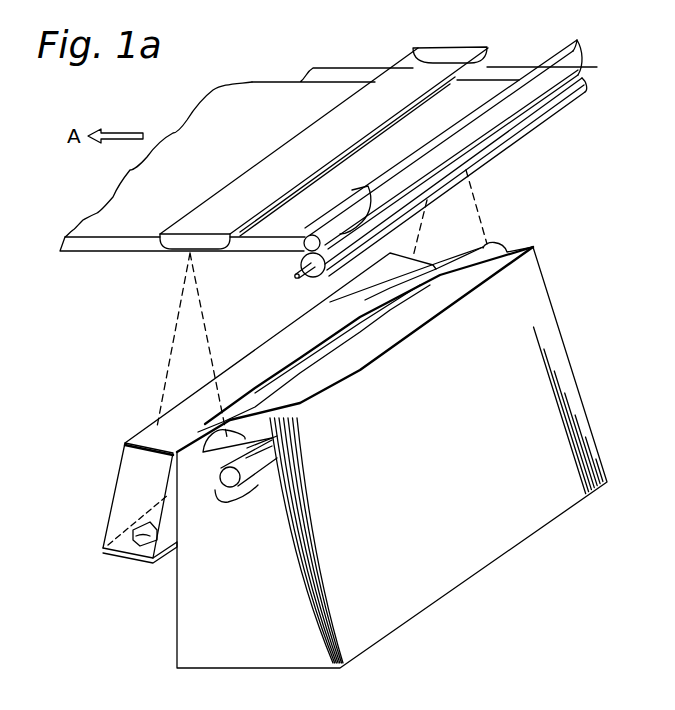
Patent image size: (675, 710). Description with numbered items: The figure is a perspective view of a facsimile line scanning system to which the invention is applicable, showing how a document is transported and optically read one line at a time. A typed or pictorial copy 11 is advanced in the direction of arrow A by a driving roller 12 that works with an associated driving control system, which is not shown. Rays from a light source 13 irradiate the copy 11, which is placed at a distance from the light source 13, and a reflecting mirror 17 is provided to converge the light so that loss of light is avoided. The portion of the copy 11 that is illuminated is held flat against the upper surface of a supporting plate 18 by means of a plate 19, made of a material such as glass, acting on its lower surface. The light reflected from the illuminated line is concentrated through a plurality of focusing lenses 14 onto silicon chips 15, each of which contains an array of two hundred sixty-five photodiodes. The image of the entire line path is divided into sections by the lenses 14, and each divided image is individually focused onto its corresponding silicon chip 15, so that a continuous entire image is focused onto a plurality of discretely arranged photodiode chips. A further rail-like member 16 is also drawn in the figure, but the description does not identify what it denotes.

The copy 11 is at (497, 110).
The driving roller 12 is at (485, 154).
The light source 13 is at (280, 465).
The focusing lenses 14 is at (200, 402).
The silicon chip 15 is at (127, 552).
The guide rail 16 is at (363, 345).
The reflecting mirror 17 is at (243, 502).
The supporting plate 18 is at (263, 165).
The plate 19 is at (100, 251).